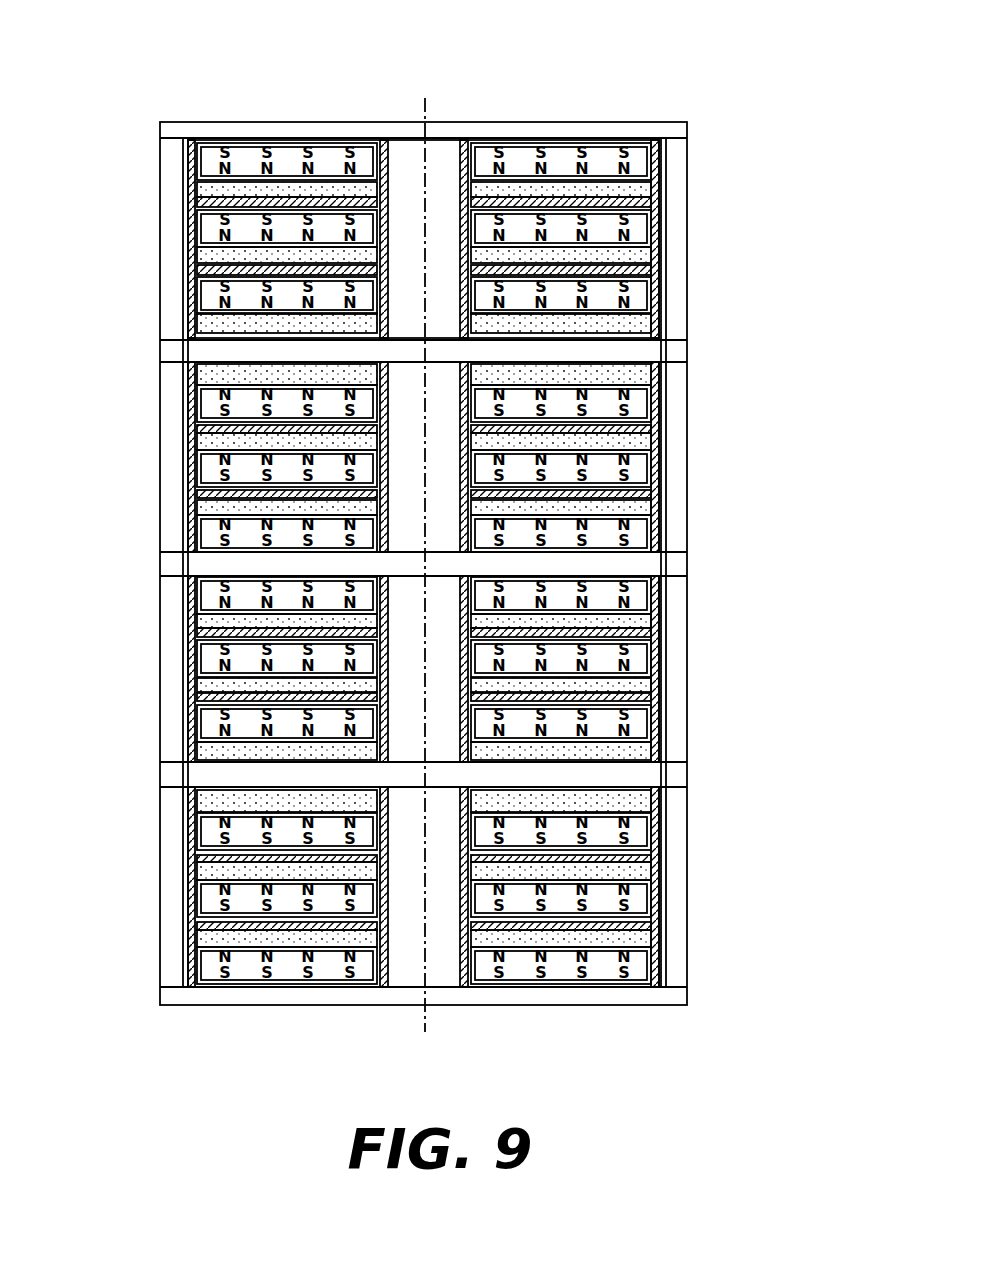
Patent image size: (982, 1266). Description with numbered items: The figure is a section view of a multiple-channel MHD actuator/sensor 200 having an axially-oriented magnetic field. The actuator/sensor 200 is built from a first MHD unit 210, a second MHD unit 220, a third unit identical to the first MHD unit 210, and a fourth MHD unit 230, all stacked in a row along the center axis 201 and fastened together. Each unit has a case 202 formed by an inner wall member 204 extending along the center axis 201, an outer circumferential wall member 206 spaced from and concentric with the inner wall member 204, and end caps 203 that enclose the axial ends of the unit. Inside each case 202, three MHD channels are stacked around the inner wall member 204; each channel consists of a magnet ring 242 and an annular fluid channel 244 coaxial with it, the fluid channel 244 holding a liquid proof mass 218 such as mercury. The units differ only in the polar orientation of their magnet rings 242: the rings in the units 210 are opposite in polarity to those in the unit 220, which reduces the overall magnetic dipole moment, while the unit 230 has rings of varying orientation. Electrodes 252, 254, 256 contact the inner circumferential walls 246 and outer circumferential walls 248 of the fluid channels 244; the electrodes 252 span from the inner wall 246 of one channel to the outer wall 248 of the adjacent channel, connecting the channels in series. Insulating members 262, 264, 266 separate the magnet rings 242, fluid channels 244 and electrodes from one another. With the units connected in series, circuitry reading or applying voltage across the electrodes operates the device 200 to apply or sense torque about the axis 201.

The multiple-channel MHD actuator/sensor 200 is at (122, 50).
The center axis 201 is at (425, 100).
The case 202 is at (162, 283).
The end caps 203 is at (268, 130).
The inner wall member 204 is at (397, 197).
The outer circumferential wall member 206 is at (165, 245).
The first MHD unit 210 is at (700, 245).
The liquid proof mass 218 is at (625, 283).
The second MHD unit 220 is at (730, 478).
The fourth MHD unit 230 is at (712, 910).
The magnet ring 242 is at (627, 158).
The annular fluid channel 244 is at (590, 253).
The inner circumferential wall 246 is at (458, 378).
The outer circumferential wall 248 is at (655, 370).
The electrode 252 is at (660, 208).
The electrode 254 is at (190, 160).
The electrode 256 is at (402, 385).
The insulating member 262 is at (197, 410).
The insulating member 264 is at (600, 198).
The insulating member 266 is at (557, 207).